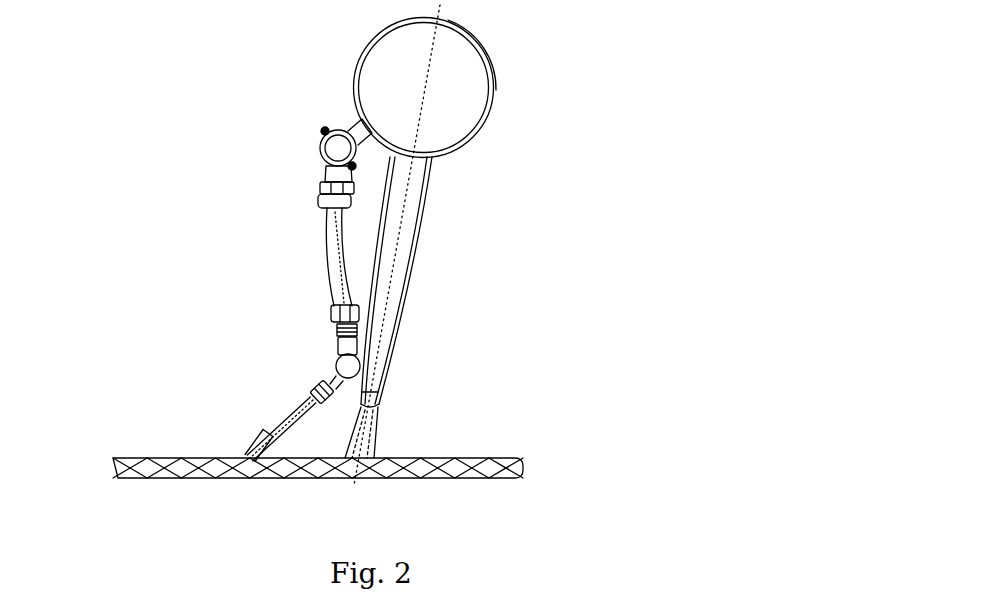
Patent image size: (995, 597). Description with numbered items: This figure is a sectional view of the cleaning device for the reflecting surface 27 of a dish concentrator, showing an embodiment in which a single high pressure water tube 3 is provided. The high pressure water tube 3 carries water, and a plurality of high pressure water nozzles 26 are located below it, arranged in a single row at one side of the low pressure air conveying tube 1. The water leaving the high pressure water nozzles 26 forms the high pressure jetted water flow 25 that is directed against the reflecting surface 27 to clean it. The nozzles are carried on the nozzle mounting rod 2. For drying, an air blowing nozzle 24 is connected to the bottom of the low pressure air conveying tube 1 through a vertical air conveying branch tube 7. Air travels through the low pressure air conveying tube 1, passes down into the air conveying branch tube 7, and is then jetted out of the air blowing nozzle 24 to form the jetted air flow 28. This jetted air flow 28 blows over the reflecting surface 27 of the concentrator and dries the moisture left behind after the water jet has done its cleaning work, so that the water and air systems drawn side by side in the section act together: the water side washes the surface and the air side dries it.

The low pressure air conveying tube 1 is at (495, 82).
The nozzle mounting rod 2 is at (336, 350).
The high pressure water tube 3 is at (320, 138).
The air conveying branch tube 7 is at (422, 230).
The air blowing nozzle 24 is at (384, 388).
The high pressure jetted water flow 25 is at (265, 430).
The high pressure water nozzle 26 is at (316, 394).
The reflecting surface of a concentrator 27 is at (152, 455).
The jetted air flow 28 is at (380, 430).